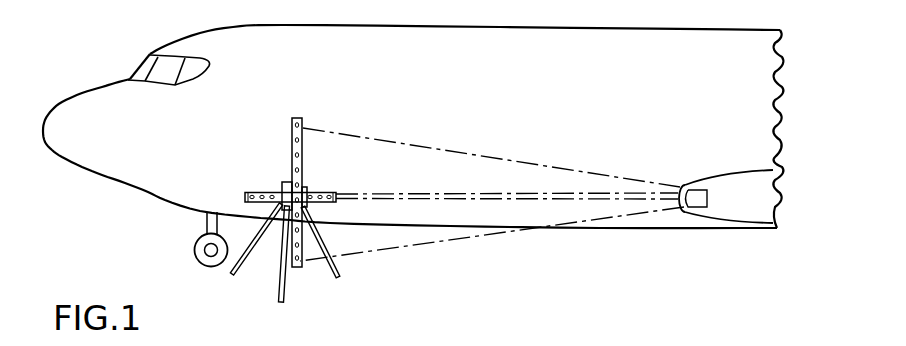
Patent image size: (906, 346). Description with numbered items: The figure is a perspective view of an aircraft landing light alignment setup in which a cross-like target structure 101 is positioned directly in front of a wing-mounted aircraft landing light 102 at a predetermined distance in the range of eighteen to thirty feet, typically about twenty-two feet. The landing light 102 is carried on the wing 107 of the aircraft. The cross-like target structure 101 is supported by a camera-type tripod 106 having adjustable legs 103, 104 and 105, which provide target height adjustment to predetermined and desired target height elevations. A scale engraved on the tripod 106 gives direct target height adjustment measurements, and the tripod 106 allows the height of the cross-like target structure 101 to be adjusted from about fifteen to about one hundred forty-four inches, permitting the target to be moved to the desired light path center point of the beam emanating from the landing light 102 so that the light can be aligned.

The cross-like target structure 101 is at (290, 155).
The wing-mounted aircraft landing light 102 is at (682, 180).
The adjustable leg 103 is at (289, 281).
The adjustable leg 104 is at (326, 245).
The adjustable leg 105 is at (250, 234).
The camera-type tripod 106 is at (261, 274).
The wing 107 is at (731, 167).